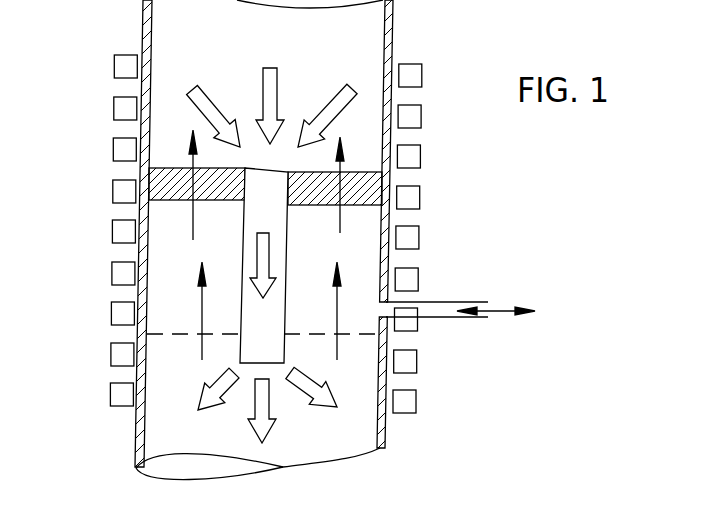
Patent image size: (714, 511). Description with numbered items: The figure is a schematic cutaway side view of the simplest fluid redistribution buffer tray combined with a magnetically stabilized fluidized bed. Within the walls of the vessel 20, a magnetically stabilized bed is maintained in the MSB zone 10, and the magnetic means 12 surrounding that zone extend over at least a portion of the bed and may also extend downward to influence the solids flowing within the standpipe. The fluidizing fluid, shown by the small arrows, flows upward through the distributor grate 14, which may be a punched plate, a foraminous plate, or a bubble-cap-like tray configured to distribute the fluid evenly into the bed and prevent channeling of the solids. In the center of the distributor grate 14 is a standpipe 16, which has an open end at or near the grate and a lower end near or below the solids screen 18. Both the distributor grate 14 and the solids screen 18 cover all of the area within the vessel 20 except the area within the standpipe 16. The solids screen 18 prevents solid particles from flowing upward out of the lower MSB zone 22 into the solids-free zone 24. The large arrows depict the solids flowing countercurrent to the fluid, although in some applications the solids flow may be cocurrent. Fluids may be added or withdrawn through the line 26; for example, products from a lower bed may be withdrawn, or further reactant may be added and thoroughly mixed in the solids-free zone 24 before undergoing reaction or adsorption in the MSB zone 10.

The MSB zone 10 is at (313, 73).
The magnetic means 12 is at (114, 58).
The distributor grate 14 is at (370, 206).
The standpipe 16 is at (289, 252).
The solids screen 18 is at (160, 334).
The vessel 20 is at (140, 254).
The lower MSB zone 22 is at (188, 407).
The solids-free zone 24 is at (220, 252).
The line 26 is at (455, 302).